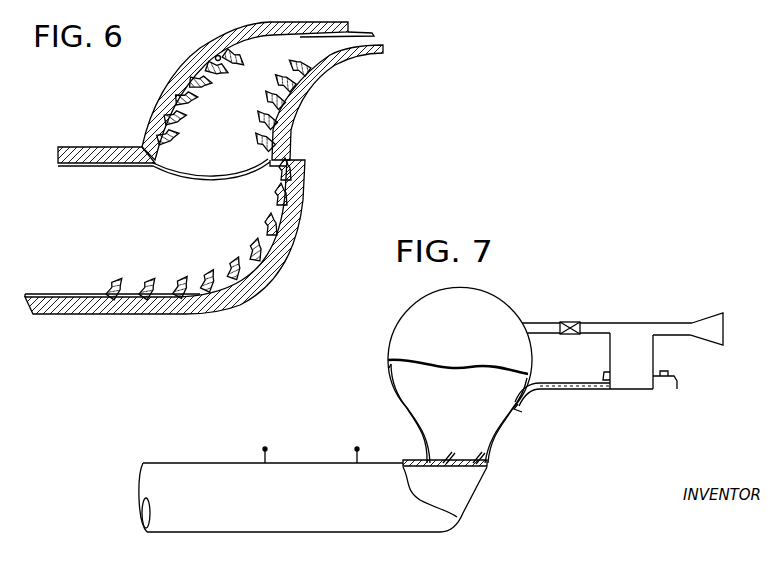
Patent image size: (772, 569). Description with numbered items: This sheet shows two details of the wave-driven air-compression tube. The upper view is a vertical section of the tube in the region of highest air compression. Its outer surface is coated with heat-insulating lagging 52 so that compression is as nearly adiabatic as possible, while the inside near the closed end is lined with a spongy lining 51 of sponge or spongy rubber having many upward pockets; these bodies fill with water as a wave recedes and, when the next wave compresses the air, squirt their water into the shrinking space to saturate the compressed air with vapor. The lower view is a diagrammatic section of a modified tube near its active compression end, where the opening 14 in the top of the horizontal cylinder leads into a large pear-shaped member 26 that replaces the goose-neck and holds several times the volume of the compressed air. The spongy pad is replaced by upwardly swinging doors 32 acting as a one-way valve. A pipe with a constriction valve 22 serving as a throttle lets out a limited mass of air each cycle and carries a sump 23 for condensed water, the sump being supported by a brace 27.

In FIG. 6, the lagging 52 is at (157, 97).
In FIG. 6, the spongy lining 51 is at (268, 113).
In FIG. 7, the pear-shaped member 26 is at (390, 347).
In FIG. 7, the constriction valve 22 is at (568, 321).
In FIG. 7, the sump 23 is at (618, 358).
In FIG. 7, the brace 27 is at (552, 389).
In FIG. 7, the opening 14 is at (323, 460).
In FIG. 7, the upwardly swinging doors 32 is at (473, 457).